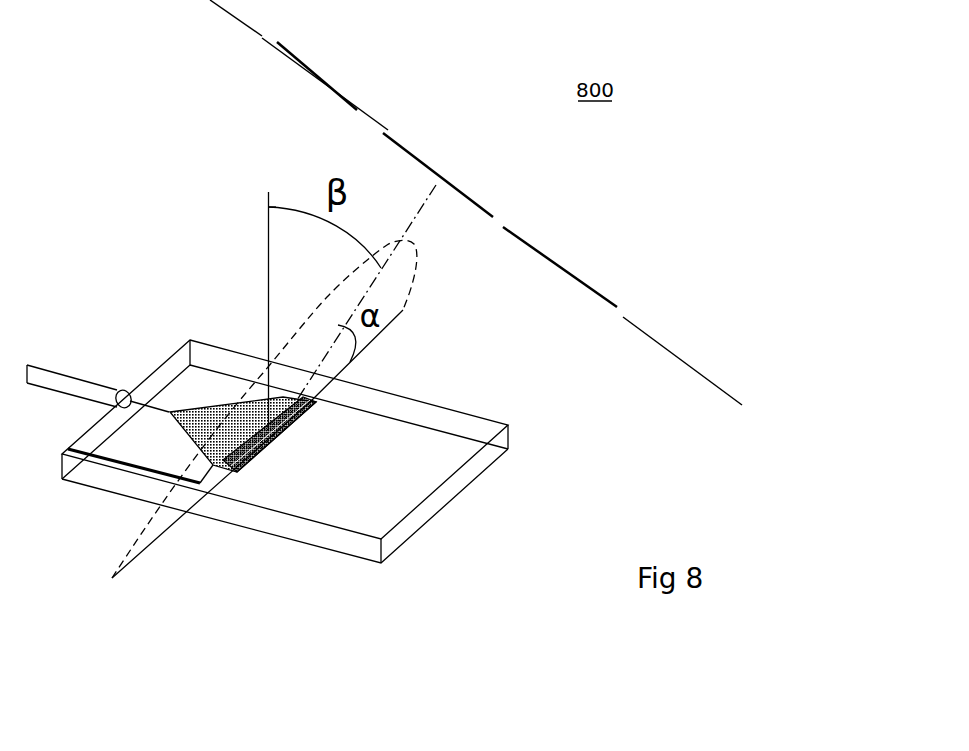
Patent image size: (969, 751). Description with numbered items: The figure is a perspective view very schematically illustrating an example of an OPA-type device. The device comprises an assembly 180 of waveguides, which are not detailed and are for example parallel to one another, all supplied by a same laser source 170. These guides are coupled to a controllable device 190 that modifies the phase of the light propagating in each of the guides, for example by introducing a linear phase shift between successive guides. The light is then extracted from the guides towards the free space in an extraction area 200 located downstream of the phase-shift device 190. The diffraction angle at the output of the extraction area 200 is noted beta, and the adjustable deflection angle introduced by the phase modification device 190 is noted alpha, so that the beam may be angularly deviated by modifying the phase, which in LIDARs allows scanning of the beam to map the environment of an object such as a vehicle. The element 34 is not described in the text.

The substrate 34 is at (477, 427).
The laser source 170 is at (50, 368).
The assembly of waveguides 180 is at (198, 405).
The controllable phase-shift device 190 is at (262, 415).
The extraction area 200 is at (310, 412).